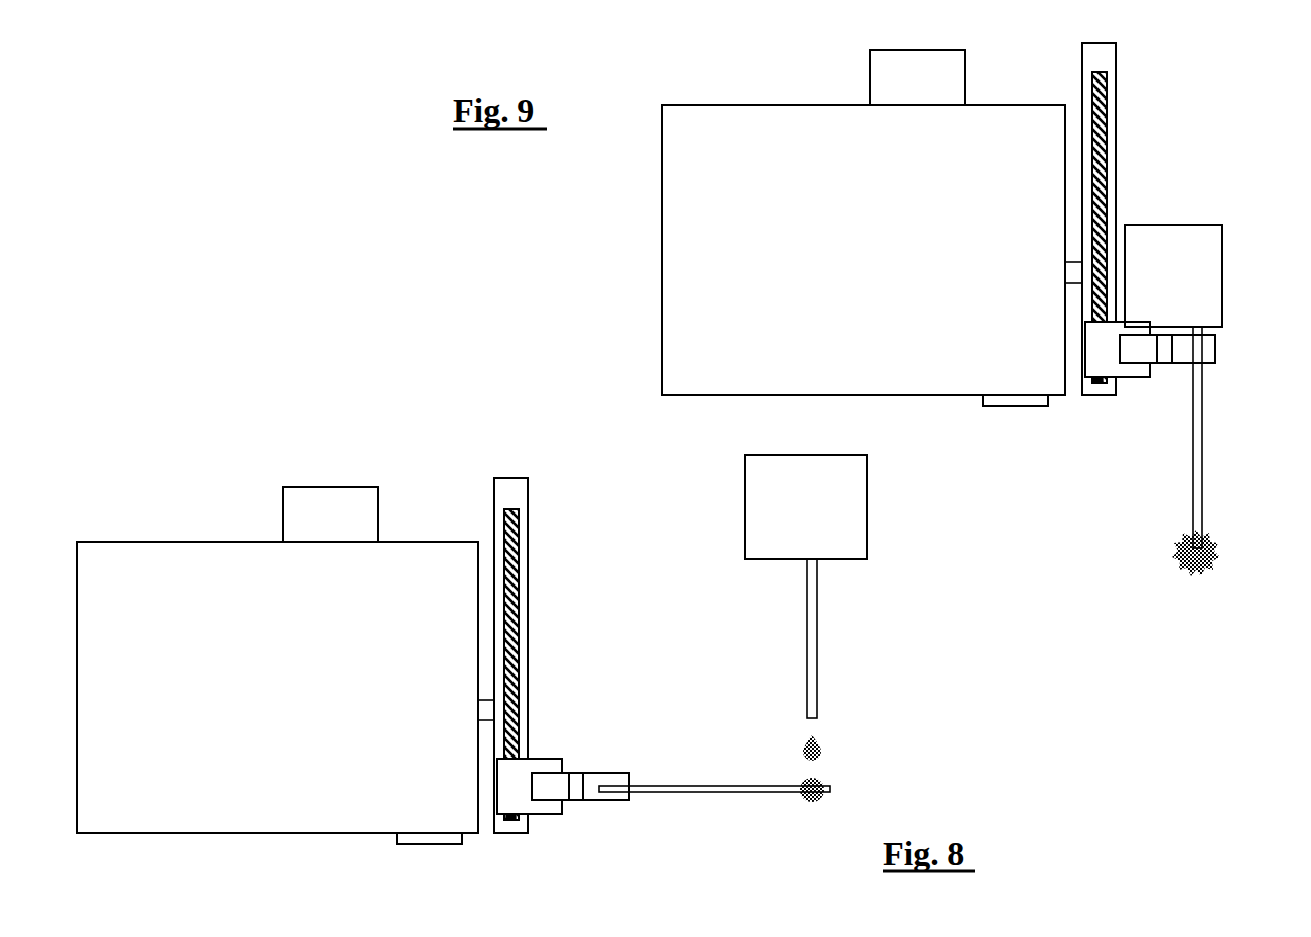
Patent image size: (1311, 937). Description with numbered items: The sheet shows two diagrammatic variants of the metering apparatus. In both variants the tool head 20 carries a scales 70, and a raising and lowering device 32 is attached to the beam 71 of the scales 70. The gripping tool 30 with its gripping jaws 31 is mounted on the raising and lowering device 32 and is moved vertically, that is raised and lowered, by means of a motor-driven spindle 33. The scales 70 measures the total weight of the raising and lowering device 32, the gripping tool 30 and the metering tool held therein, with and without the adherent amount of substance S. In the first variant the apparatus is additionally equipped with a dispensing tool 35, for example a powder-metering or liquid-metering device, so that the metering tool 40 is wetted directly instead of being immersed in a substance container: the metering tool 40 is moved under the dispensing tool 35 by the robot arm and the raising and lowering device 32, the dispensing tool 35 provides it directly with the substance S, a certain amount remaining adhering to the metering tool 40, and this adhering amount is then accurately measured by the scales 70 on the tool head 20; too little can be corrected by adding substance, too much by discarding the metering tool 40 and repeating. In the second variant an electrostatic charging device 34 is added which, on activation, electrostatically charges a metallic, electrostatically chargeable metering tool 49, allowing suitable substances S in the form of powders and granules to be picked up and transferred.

In FIG. 8, the tool head 20 is at (302, 502).
In FIG. 9, the tool head 20 is at (890, 79).
In FIG. 8, the gripping tool 30 is at (546, 820).
In FIG. 9, the gripping tool 30 is at (1134, 390).
In FIG. 8, the gripping jaws 31 is at (612, 776).
In FIG. 9, the gripping jaws 31 is at (1216, 346).
In FIG. 8, the raising and lowering device 32 is at (532, 535).
In FIG. 9, the raising and lowering device 32 is at (1121, 100).
In FIG. 8, the motor-driven spindle 33 is at (504, 540).
In FIG. 9, the motor-driven spindle 33 is at (1092, 100).
In FIG. 9, the electrostatic charging device 34 is at (1216, 246).
In FIG. 8, the dispensing tool 35 is at (756, 511).
In FIG. 8, the metering tool 40 is at (705, 790).
In FIG. 9, the metering tool 49 is at (1193, 470).
In FIG. 8, the scales 70 is at (157, 815).
In FIG. 9, the scales 70 is at (662, 305).
In FIG. 8, the beam 71 is at (478, 710).
In FIG. 9, the beam 71 is at (1065, 273).
In FIG. 8, the substance S is at (822, 786).
In FIG. 9, the substance S is at (1178, 552).